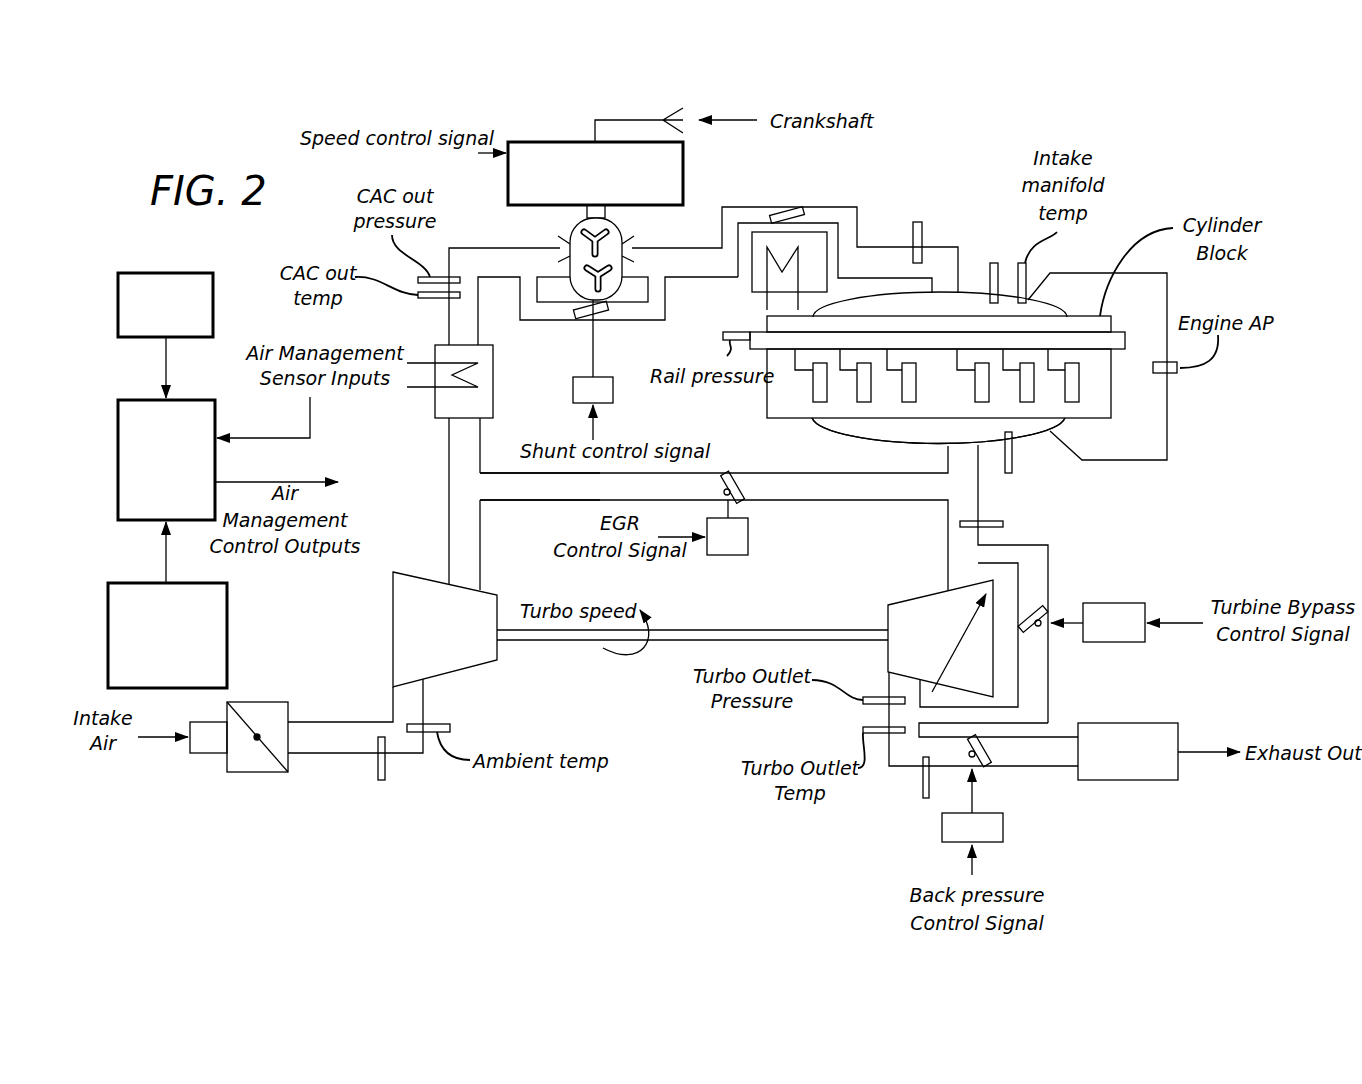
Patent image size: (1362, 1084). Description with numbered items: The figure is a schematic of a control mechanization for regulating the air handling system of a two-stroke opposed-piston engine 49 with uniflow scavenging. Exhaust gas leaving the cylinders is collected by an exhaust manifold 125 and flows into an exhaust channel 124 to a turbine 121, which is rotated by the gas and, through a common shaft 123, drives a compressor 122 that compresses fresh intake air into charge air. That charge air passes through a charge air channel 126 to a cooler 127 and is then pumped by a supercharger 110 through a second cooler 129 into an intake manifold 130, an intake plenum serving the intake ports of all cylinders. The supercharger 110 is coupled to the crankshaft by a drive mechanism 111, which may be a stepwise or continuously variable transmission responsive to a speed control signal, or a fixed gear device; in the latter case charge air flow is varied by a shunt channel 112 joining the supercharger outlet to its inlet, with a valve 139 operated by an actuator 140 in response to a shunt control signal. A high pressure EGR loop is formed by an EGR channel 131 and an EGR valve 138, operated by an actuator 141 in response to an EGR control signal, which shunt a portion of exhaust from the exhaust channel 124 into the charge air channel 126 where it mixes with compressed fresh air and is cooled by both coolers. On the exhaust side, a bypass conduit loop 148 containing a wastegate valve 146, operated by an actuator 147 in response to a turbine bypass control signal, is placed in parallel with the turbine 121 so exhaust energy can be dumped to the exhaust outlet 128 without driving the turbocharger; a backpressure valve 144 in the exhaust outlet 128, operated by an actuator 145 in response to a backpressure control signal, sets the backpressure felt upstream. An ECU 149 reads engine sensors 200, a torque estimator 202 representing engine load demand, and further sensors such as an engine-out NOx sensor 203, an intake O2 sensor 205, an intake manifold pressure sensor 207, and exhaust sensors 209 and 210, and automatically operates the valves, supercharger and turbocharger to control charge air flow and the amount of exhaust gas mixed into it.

The engine 49 is at (1260, 286).
The supercharger 110 is at (612, 228).
The drive mechanism 111 is at (683, 170).
The shunt channel 112 is at (541, 320).
The turbine 121 is at (908, 603).
The compressor 122 is at (390, 632).
The common shaft 123 is at (755, 628).
The exhaust channel 124 is at (978, 498).
The exhaust manifold 125 is at (850, 437).
The charge air channel 126 is at (480, 520).
The cooler 127 is at (493, 378).
The exhaust outlet 128 is at (1067, 737).
The cooler 129 is at (750, 282).
The intake manifold 130 is at (1026, 297).
The EGR channel 131 is at (850, 505).
The EGR valve 138 is at (742, 488).
The shunt valve 139 is at (603, 312).
The actuator 140 is at (613, 395).
The actuator 141 is at (267, 772).
The backpressure valve 144 is at (985, 752).
The actuator 145 is at (1003, 825).
The wastegate valve 146 is at (1030, 608).
The actuator 147 is at (1115, 603).
The bypass conduit loop 148 is at (1048, 553).
The ECU 149 is at (138, 398).
The engine sensors 200 is at (227, 630).
The estimator 202 is at (183, 273).
The engine out NOx sensor 203 is at (923, 790).
The intake O2 sensor 205 is at (912, 237).
The intake manifold pressure sensor 207 is at (990, 280).
The exhaust sensor 209 is at (1012, 468).
The exhaust sensor 210 is at (1003, 524).